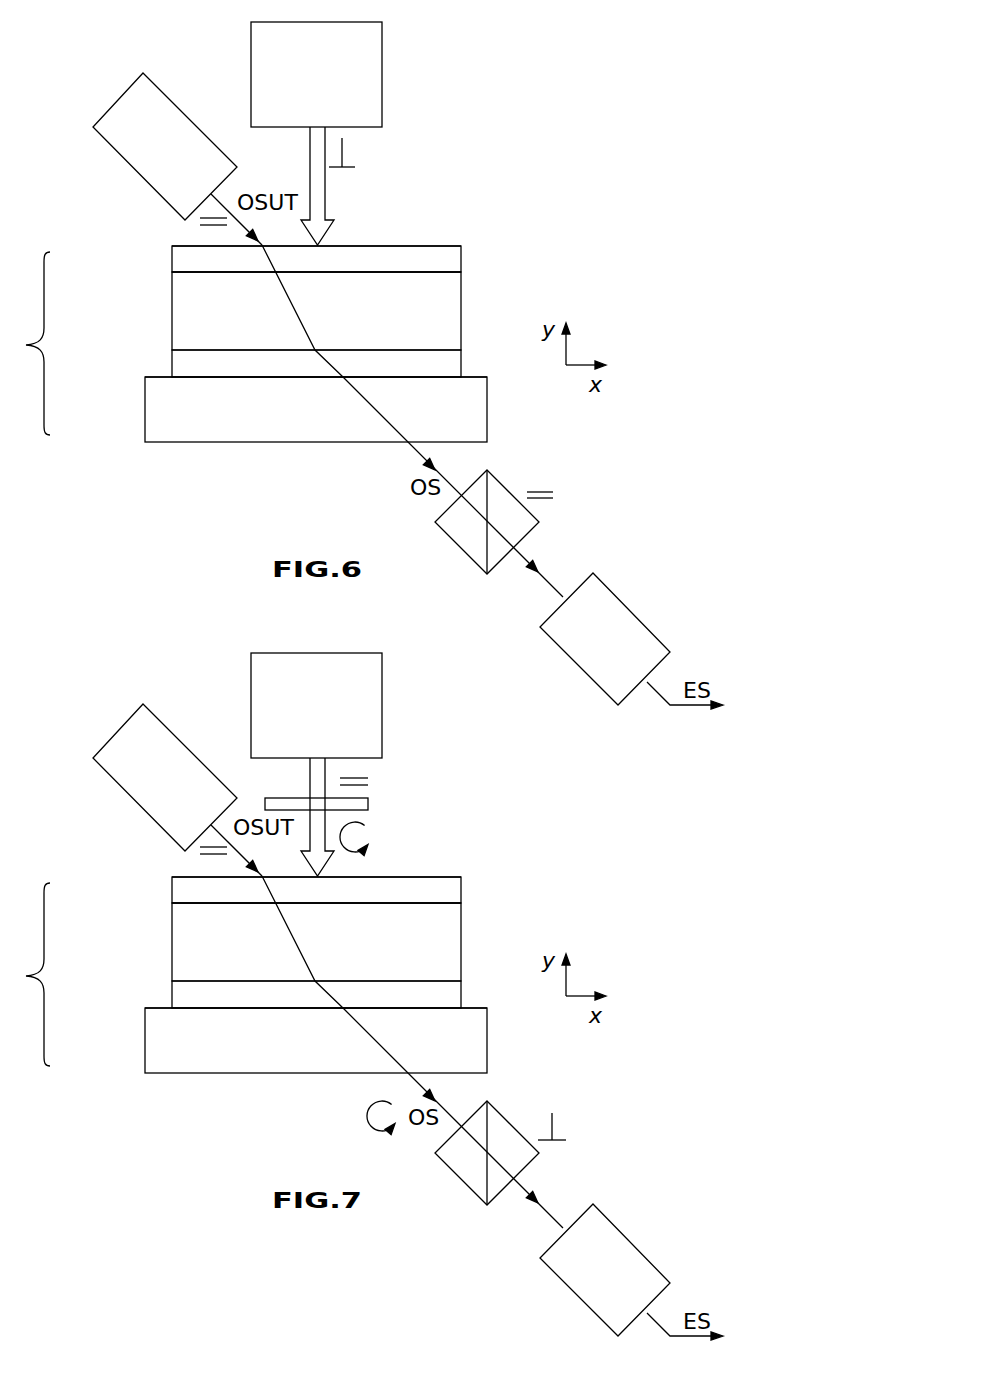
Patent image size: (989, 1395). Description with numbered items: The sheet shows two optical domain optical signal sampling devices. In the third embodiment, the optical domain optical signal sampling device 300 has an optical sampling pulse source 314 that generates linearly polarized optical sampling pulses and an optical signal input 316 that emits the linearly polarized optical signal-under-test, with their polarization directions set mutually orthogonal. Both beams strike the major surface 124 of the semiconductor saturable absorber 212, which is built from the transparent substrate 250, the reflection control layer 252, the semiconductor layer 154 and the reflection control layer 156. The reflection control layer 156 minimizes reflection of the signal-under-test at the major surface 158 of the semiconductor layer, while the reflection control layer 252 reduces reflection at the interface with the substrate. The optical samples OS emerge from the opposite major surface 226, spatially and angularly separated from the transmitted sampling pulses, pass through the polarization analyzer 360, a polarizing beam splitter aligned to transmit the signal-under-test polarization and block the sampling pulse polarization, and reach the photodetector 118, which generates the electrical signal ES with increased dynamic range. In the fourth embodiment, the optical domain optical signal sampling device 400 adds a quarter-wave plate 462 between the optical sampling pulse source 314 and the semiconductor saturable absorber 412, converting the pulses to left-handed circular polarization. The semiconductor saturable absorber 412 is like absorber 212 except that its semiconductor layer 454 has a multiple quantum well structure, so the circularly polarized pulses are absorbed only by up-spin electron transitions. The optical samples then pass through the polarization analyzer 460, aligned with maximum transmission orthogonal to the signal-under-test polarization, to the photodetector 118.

In FIG. 6, the optical sampling pulse source 314 is at (335, 90).
In FIG. 7, the optical sampling pulse source 314 is at (316, 764).
In FIG. 6, the optical signal input 316 is at (190, 168).
In FIG. 7, the optical signal input 316 is at (165, 777).
In FIG. 6, the major surface 124 is at (347, 245).
In FIG. 7, the major surface 124 is at (316, 852).
In FIG. 6, the reflection control layer 156 is at (172, 259).
In FIG. 7, the reflection control layer 156 is at (284, 890).
In FIG. 6, the semiconductor layer 154 is at (172, 304).
In FIG. 6, the reflection control layer 252 is at (172, 364).
In FIG. 7, the reflection control layer 252 is at (284, 995).
In FIG. 6, the transparent substrate 250 is at (145, 409).
In FIG. 7, the transparent substrate 250 is at (283, 1040).
In FIG. 6, the semiconductor saturable absorber 212 is at (26, 343).
In FIG. 6, the major surface 158 is at (452, 272).
In FIG. 7, the major surface 158 is at (345, 888).
In FIG. 6, the major surface 226 is at (448, 378).
In FIG. 7, the major surface 226 is at (341, 1032).
In FIG. 6, the optical domain optical signal sampling device 300 is at (268, 508).
In FIG. 6, the polarization analyzer 360 is at (490, 472).
In FIG. 6, the photodetector 118 is at (623, 655).
In FIG. 7, the photodetector 118 is at (605, 1270).
In FIG. 7, the quarter-wave plate 462 is at (351, 791).
In FIG. 7, the semiconductor layer 454 is at (284, 942).
In FIG. 7, the semiconductor saturable absorber 412 is at (26, 974).
In FIG. 7, the optical domain optical signal sampling device 400 is at (250, 1128).
In FIG. 7, the polarization analyzer 460 is at (499, 1143).